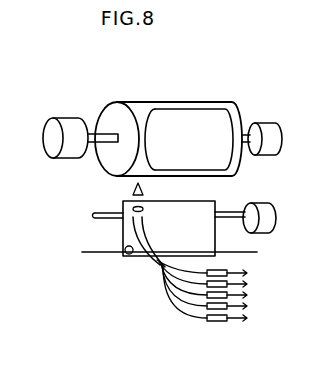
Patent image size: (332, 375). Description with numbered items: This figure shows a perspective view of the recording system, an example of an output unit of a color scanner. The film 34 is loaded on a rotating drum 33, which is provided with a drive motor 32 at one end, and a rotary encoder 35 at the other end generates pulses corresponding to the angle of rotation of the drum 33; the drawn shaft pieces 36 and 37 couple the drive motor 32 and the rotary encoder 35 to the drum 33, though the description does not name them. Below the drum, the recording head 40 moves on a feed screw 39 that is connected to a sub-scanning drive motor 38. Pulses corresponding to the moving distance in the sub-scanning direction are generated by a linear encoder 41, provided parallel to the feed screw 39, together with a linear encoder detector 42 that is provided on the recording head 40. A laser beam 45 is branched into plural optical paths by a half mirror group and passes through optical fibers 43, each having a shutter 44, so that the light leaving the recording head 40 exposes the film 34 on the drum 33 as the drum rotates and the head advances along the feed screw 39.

The drive motor 32 is at (70, 117).
The rotating drum 33 is at (143, 101).
The film 34 is at (210, 108).
The rotary encoder 35 is at (283, 130).
The drive shaft 36 is at (103, 126).
The stub shaft 37 is at (257, 127).
The sub-scanning drive motor 38 is at (277, 214).
The feed screw 39 is at (238, 208).
The recording head 40 is at (216, 236).
The linear encoder 41 is at (255, 255).
The linear encoder detector 42 is at (126, 256).
The optical fibers 43 is at (160, 266).
The shutters 44 is at (213, 323).
The laser beam 45 is at (246, 325).